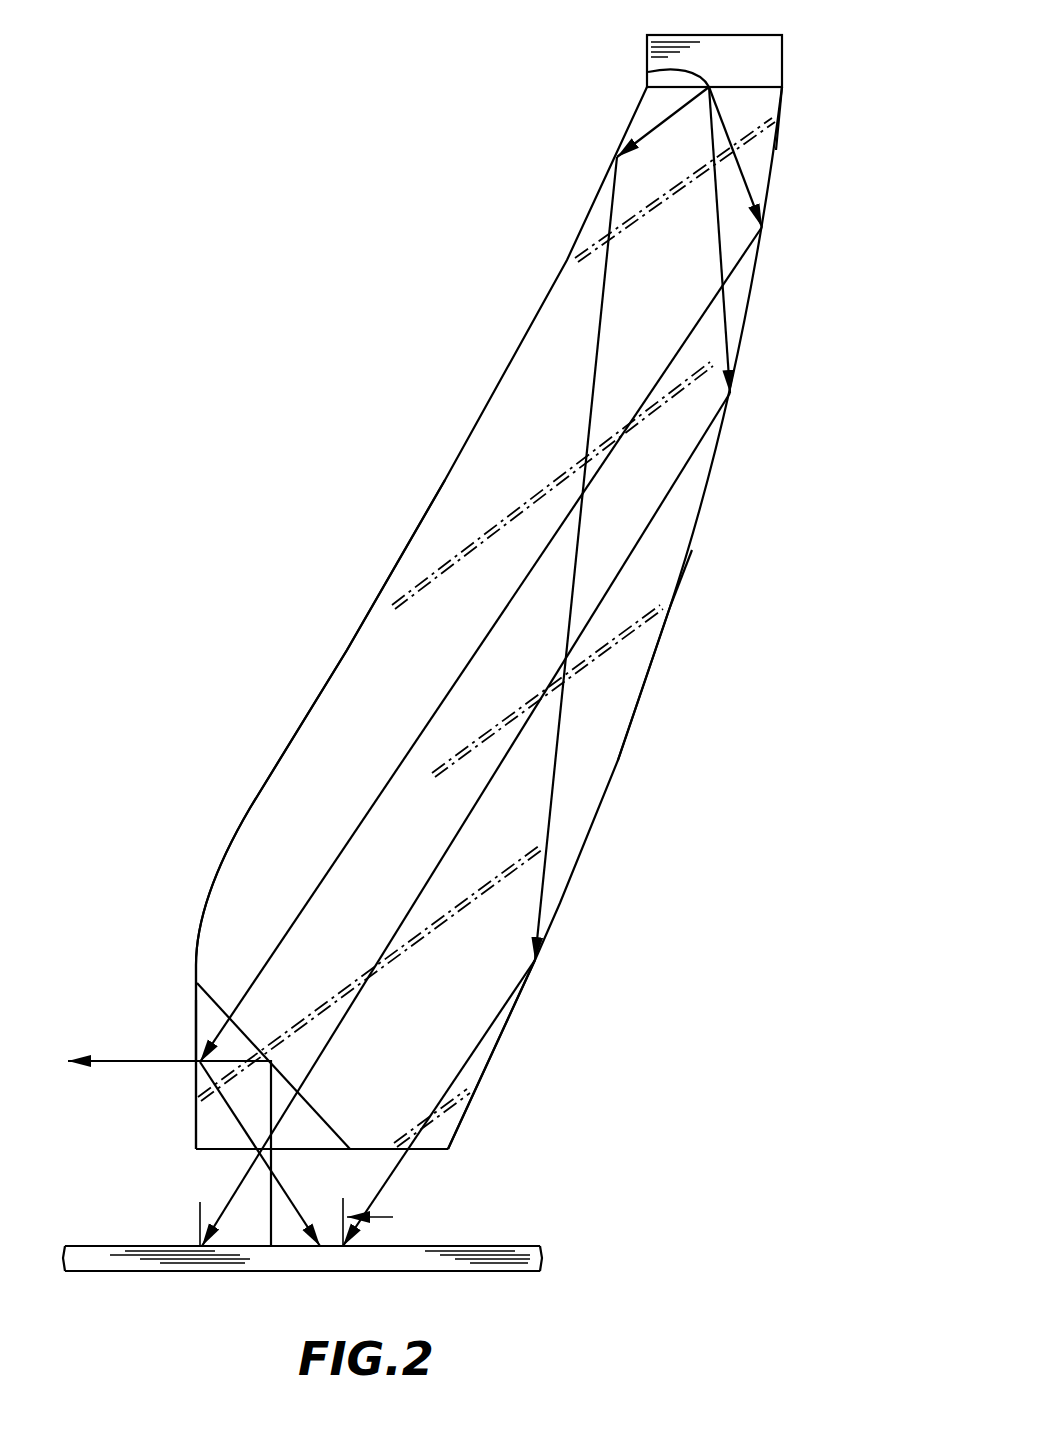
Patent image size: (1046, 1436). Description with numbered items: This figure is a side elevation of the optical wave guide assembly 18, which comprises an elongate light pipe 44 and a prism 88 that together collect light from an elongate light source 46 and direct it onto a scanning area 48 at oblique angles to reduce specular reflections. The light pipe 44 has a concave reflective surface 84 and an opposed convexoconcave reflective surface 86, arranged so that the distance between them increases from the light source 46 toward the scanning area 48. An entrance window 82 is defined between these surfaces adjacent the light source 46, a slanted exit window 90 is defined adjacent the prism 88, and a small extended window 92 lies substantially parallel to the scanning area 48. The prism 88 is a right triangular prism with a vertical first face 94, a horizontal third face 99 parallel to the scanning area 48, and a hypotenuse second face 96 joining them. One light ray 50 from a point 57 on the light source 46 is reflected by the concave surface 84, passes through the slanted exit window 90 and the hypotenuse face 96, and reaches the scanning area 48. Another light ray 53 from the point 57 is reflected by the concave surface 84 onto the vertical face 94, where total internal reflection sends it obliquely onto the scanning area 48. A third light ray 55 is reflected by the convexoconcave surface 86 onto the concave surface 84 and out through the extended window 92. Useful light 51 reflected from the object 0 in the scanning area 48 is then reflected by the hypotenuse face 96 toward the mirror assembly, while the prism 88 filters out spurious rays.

The elongate light source 46 is at (786, 49).
The point on light source 57 is at (648, 72).
The entrance window 82 is at (762, 88).
The third light ray 55 is at (594, 358).
The optical wave guide assembly 18 is at (329, 522).
The light ray 50 is at (680, 479).
The elongate light pipe 44 is at (690, 565).
The convexoconcave reflective surface 86 is at (346, 652).
The concave reflective surface 84 is at (641, 683).
The light ray 53 is at (347, 842).
The slanted exit window 90 is at (204, 988).
The first face 94 is at (200, 1020).
The reflected light 51 is at (130, 1063).
The prism 88 is at (195, 1120).
The second face 96 is at (320, 1110).
The extended window 92 is at (432, 1144).
The third face 99 is at (322, 1150).
The scanning area 48 is at (197, 1217).
The object 0 is at (500, 1272).